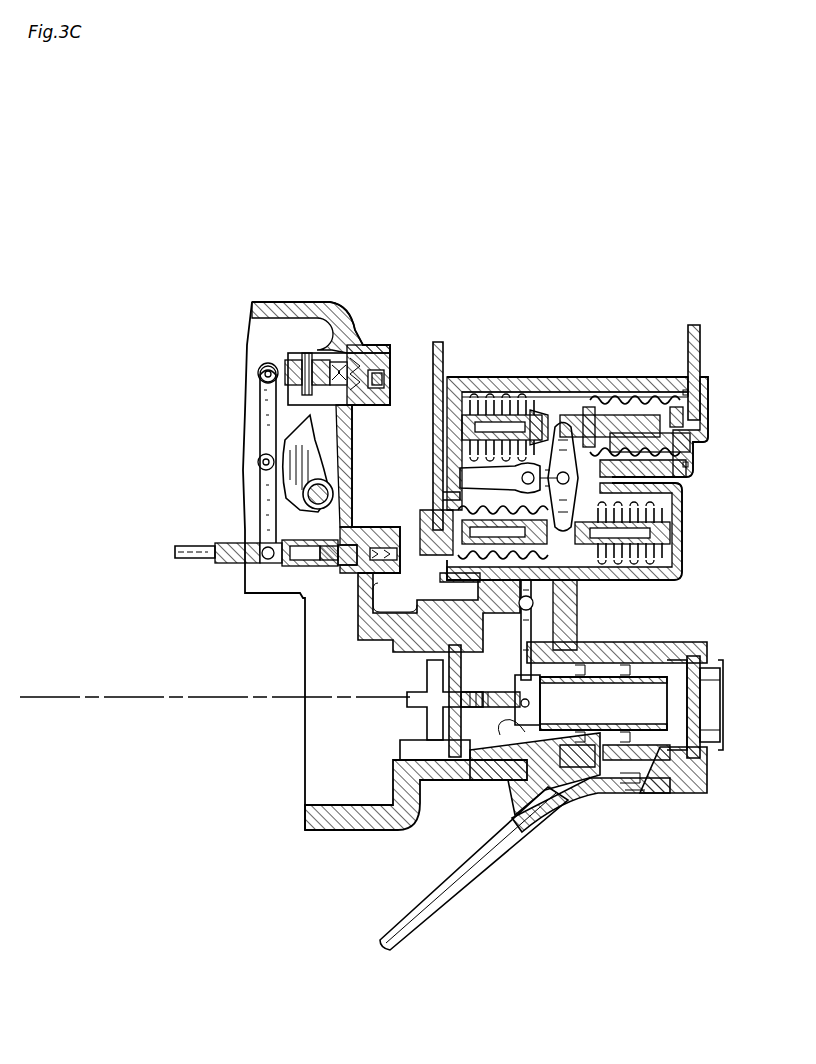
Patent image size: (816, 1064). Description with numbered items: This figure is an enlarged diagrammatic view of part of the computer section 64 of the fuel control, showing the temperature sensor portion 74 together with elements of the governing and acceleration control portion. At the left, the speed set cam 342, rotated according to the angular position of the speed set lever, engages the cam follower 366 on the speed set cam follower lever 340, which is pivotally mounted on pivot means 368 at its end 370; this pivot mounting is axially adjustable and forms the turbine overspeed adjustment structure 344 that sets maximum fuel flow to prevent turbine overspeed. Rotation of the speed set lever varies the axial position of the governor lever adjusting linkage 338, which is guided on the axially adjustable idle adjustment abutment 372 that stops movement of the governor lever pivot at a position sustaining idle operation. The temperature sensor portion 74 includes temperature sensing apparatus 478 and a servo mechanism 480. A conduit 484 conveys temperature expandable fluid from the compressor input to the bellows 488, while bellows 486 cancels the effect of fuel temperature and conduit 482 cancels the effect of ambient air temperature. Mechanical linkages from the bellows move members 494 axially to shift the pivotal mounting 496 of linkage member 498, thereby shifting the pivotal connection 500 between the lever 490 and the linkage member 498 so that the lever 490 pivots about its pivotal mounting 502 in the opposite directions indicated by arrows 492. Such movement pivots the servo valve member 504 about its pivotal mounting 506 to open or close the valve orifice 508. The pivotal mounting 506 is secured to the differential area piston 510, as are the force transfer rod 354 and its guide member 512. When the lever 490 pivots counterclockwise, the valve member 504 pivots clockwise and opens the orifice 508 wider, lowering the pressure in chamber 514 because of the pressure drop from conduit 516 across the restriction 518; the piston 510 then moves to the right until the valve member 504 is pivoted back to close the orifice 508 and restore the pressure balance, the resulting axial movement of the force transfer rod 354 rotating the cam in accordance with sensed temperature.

The computer section 64 is at (385, 583).
The temperature sensor portion 74 is at (611, 374).
The governor lever adjusting linkage 338 is at (228, 562).
The speed set cam follower lever 340 is at (234, 438).
The speed set cam 342 is at (304, 444).
The turbine overspeed adjustment structure 344 is at (358, 347).
The force transfer rod 354 is at (348, 692).
The cam follower 366 is at (258, 462).
The pivot means 368 is at (258, 368).
The end of cam follower lever 370 is at (258, 376).
The idle adjustment abutment 372 is at (303, 589).
The temperature sensing apparatus 478 is at (652, 380).
The servo mechanism 480 is at (612, 797).
The conduit 482 is at (445, 348).
The conduit 484 is at (700, 342).
The bellows 486 is at (458, 562).
The bellows 488 is at (628, 398).
The lever 490 is at (537, 630).
The arrows 492 is at (550, 652).
The members 494 is at (622, 562).
The pivotal mounting 496 is at (625, 480).
The linkage member 498 is at (462, 472).
The pivotal connection 500 is at (442, 495).
The pivotal mounting 502 is at (528, 378).
The servo valve member 504 is at (506, 690).
The pivotal mounting 506 is at (518, 712).
The valve orifice 508 is at (548, 722).
The differential area piston 510 is at (660, 637).
The guide member 512 is at (456, 777).
The chamber 514 is at (630, 712).
The conduit 516 is at (566, 808).
The restriction 518 is at (648, 795).